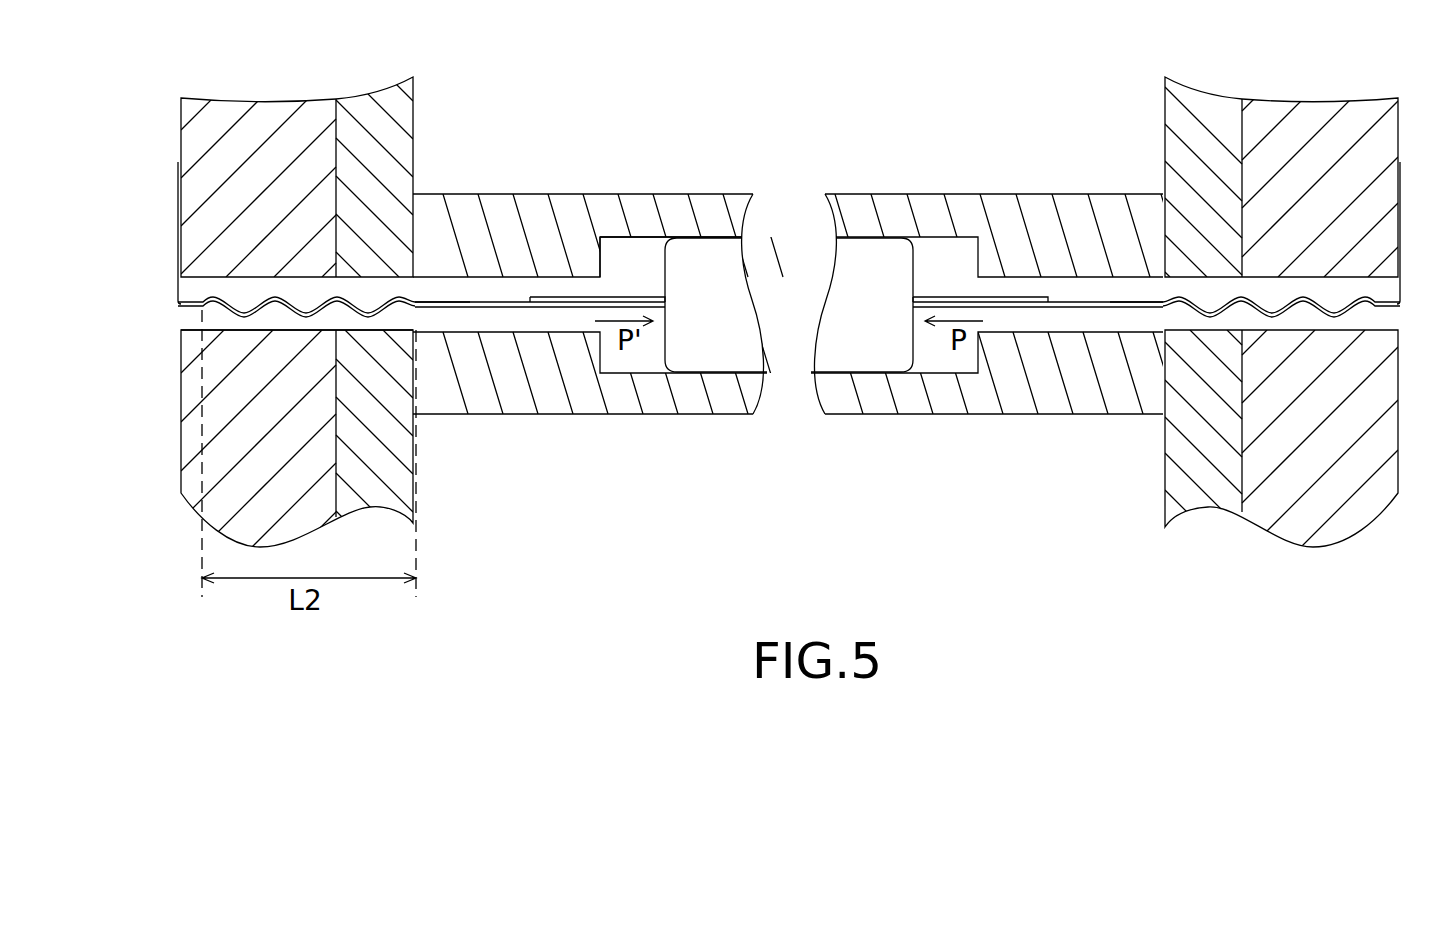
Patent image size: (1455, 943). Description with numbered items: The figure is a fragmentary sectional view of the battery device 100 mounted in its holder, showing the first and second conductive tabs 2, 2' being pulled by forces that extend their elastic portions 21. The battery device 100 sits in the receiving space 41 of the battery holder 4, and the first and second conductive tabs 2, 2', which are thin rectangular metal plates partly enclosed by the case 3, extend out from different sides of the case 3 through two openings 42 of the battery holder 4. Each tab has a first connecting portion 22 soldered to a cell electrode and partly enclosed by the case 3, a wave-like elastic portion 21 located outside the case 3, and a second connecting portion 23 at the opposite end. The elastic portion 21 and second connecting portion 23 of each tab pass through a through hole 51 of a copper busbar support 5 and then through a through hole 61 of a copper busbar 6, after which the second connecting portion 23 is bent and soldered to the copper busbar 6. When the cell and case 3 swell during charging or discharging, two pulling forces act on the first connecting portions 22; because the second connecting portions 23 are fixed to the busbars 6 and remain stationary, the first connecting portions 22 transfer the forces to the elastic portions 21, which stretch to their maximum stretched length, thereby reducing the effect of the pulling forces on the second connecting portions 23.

The first conductive tab 2 is at (1038, 222).
The second conductive tab 2' is at (540, 227).
The case 3 is at (740, 236).
The battery holder 4 is at (545, 194).
The copper busbar support 5 is at (377, 117).
The copper busbar 6 is at (257, 127).
The elastic portion 21 is at (258, 300).
The first connecting portion 22 is at (460, 307).
The second connecting portion 23 is at (177, 187).
The receiving space 41 is at (633, 255).
The opening 42 is at (528, 317).
The through hole 51 is at (355, 318).
The through hole 61 is at (193, 321).
The battery device 100 is at (692, 233).